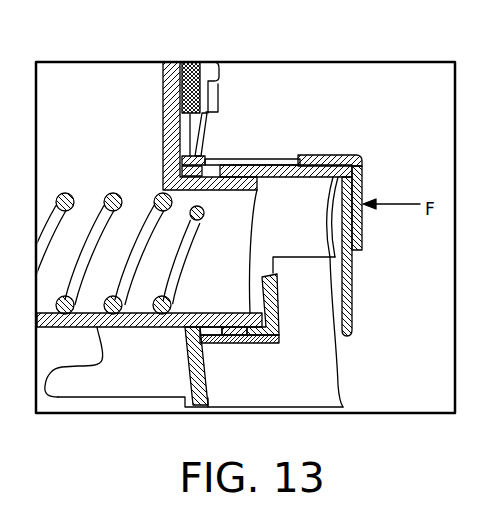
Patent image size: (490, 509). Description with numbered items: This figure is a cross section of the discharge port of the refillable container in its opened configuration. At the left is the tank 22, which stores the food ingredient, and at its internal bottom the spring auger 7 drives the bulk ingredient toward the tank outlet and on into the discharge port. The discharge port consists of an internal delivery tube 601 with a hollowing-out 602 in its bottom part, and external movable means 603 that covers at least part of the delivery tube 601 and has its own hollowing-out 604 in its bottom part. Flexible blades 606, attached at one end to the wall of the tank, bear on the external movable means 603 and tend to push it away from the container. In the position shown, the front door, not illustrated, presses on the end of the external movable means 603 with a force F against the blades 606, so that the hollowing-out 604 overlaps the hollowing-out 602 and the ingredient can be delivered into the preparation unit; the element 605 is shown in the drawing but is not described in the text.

The tank 22 is at (110, 73).
The spring auger 7 is at (48, 209).
The flexible blades 606 is at (198, 148).
The external movable means 603 is at (362, 172).
The internal delivery tube 601 is at (352, 321).
The latch 605 is at (278, 310).
The hollowing-out 602 is at (292, 393).
The hollowing-out 604 is at (330, 392).